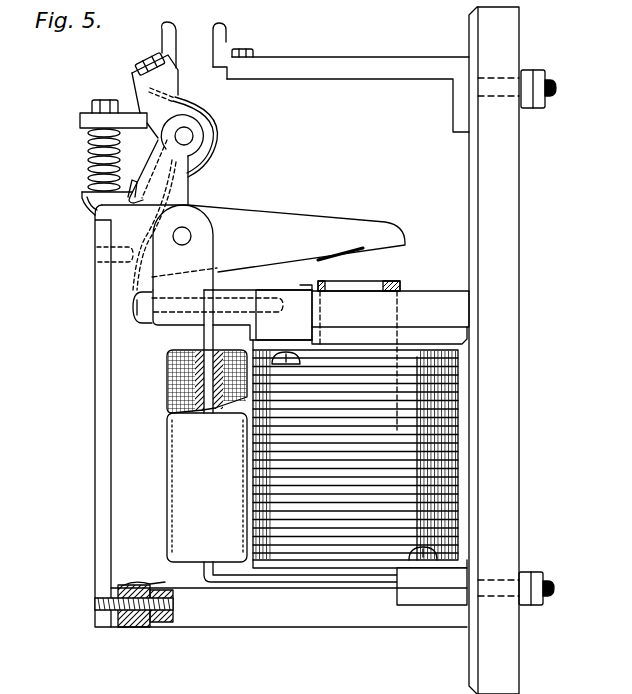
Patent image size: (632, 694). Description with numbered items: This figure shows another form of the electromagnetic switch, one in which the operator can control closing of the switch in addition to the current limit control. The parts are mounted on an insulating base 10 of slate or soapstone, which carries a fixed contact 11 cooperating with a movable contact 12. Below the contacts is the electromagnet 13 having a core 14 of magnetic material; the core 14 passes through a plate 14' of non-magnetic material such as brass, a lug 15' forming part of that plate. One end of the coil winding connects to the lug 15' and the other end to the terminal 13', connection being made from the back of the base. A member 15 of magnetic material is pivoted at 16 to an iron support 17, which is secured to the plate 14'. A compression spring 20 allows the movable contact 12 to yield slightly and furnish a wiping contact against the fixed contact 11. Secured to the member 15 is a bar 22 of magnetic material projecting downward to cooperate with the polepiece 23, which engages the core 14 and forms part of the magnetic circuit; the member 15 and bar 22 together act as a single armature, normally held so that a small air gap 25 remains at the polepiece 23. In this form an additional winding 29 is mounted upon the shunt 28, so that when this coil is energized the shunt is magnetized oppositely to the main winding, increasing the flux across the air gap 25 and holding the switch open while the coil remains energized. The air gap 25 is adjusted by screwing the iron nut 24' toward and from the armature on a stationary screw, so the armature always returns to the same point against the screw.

The insulating base 10 is at (510, 178).
The fixed contact 11 is at (218, 40).
The movable contact 12 is at (161, 44).
The electromagnet 13 is at (411, 459).
The terminal 13' is at (432, 586).
The core 14 is at (365, 273).
The plate 14' is at (390, 359).
The member 15 is at (250, 184).
The lug 15' is at (258, 327).
The pivot 16 is at (192, 238).
The support 17 is at (208, 241).
The compression spring 20 is at (88, 155).
The bar 22 is at (96, 333).
The polepiece 23 is at (273, 614).
The iron nut 24' is at (154, 627).
The air gap 25 is at (113, 627).
The shunt 28 is at (213, 336).
The additional winding 29 is at (178, 457).